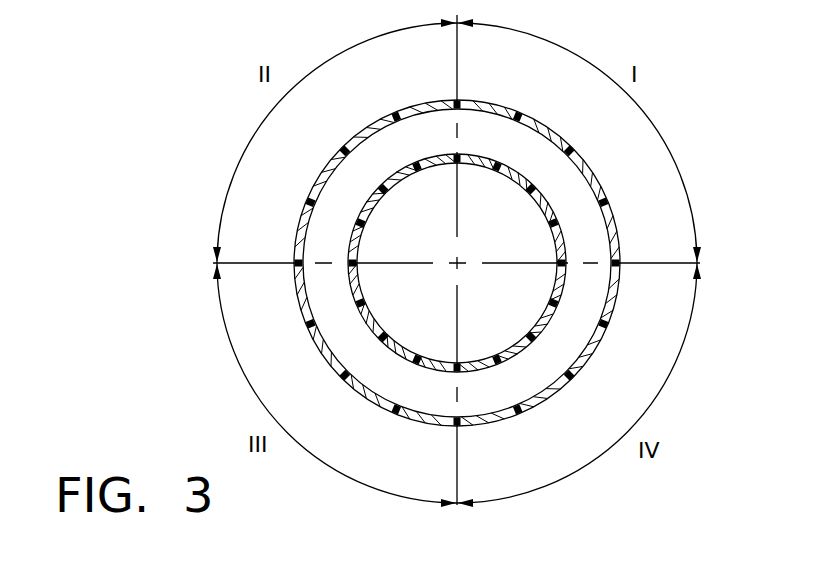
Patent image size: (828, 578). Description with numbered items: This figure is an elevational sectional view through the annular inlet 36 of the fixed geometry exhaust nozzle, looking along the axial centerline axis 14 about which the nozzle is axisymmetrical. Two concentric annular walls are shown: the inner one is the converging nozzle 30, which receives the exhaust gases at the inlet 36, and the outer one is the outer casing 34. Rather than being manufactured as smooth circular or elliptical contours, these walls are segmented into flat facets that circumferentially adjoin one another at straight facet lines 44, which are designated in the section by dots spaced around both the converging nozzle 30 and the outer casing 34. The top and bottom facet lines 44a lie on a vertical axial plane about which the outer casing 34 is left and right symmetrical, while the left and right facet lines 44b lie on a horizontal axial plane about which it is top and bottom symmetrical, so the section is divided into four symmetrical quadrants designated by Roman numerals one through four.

The axial centerline axis 14 is at (457, 258).
The converging nozzle 30 is at (562, 188).
The outer casing 34 is at (543, 122).
The annular inlet 36 is at (512, 307).
The facet lines 44 is at (345, 149).
The top and bottom facet lines 44a is at (458, 103).
The left and right facet lines 44b is at (619, 261).